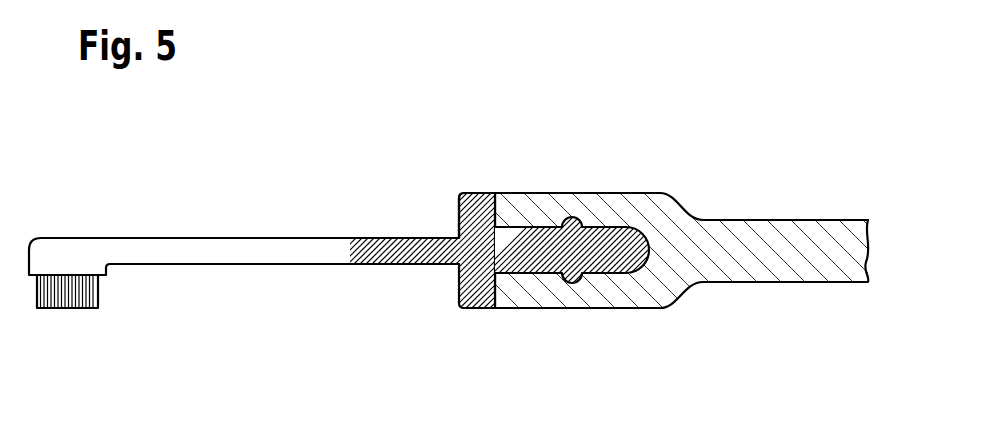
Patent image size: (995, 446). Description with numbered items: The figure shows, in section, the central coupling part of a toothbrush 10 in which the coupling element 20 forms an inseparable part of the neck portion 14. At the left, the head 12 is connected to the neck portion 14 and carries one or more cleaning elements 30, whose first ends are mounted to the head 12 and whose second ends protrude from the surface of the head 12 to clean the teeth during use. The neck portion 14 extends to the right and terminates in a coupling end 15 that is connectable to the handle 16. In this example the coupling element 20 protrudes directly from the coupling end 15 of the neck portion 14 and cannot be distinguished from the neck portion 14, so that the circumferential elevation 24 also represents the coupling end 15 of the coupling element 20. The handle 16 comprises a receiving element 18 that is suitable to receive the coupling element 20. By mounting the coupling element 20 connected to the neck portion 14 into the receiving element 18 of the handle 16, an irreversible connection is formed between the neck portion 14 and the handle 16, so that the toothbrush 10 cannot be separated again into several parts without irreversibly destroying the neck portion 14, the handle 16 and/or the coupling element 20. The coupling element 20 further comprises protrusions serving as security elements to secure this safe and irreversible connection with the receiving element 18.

The toothbrush 10 is at (343, 185).
The head 12 is at (65, 247).
The neck portion 14 is at (380, 267).
The coupling end 15 is at (452, 189).
The handle 16 is at (792, 228).
The receiving element 18 is at (541, 201).
The coupling element 20 is at (608, 265).
The circumferential elevation 24 is at (478, 195).
The cleaning elements 30 is at (70, 320).